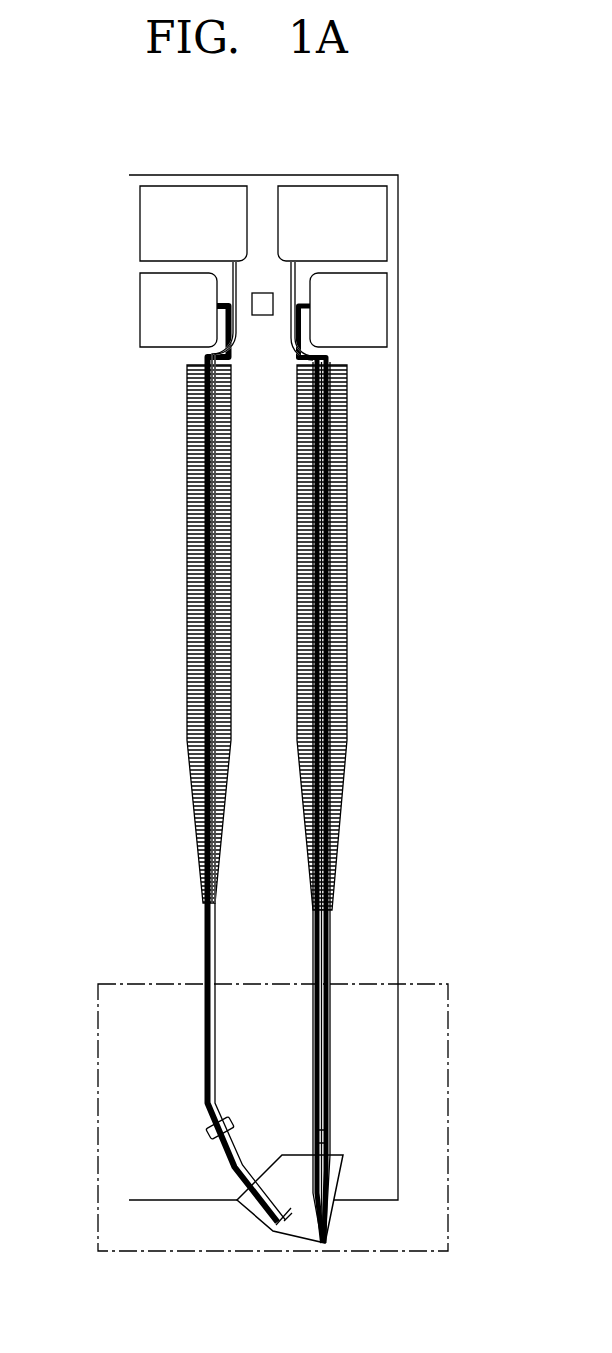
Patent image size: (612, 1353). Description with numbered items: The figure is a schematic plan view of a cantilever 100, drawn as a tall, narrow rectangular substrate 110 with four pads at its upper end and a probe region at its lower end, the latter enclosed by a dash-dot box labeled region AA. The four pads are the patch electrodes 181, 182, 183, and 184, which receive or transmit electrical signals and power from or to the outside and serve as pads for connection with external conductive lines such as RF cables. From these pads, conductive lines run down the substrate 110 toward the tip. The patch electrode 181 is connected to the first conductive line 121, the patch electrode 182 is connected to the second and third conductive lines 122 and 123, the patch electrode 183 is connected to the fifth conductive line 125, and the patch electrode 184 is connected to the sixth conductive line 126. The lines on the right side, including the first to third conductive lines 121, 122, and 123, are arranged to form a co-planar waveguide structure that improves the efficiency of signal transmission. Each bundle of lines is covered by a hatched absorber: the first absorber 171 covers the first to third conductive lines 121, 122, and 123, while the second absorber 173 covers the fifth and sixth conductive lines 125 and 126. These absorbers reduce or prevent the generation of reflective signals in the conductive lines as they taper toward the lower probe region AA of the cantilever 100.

The cantilever 100 is at (58, 162).
The substrate 110 is at (383, 580).
The first conductive line 121 is at (332, 760).
The second conductive line 122 is at (337, 703).
The third conductive line 123 is at (315, 672).
The fifth conductive line 125 is at (197, 632).
The sixth conductive line 126 is at (213, 598).
The first absorber 171 is at (335, 486).
The second absorber 173 is at (196, 473).
The patch electrode 181 is at (380, 313).
The patch electrode 182 is at (380, 222).
The patch electrode 183 is at (150, 312).
The patch electrode 184 is at (150, 220).
The enlarged region AA is at (448, 1087).